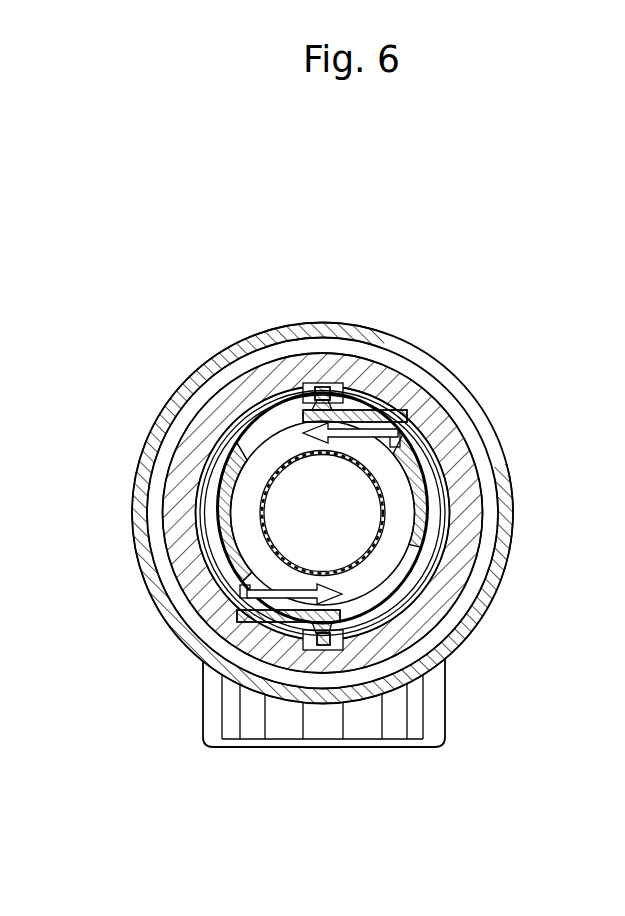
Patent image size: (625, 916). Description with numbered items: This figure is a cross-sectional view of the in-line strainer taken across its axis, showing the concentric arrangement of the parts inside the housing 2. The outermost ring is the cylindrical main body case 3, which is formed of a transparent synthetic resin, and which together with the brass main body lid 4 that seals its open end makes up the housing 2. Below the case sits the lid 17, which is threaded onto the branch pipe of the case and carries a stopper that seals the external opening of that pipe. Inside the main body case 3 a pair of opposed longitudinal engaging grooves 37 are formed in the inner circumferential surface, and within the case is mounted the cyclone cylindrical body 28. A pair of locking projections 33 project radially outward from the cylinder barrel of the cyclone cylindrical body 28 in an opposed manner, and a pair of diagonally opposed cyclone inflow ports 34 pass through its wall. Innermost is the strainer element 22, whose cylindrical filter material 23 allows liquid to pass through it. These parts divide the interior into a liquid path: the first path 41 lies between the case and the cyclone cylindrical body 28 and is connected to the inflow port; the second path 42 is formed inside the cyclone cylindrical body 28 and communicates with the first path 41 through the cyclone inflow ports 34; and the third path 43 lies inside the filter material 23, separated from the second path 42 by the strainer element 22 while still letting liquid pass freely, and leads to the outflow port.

The housing 2 is at (505, 268).
The main body case 3 is at (475, 437).
The main body lid 4 is at (437, 353).
The lid 17 is at (405, 746).
The strainer element 22 is at (260, 494).
The filter material 23 is at (323, 508).
The cyclone cylindrical body 28 is at (216, 515).
The locking projections 33 is at (323, 386).
The cyclone inflow ports 34 is at (405, 450).
The engaging grooves 37 is at (314, 405).
The first path 41 is at (448, 517).
The second path 42 is at (393, 542).
The third path 43 is at (345, 533).